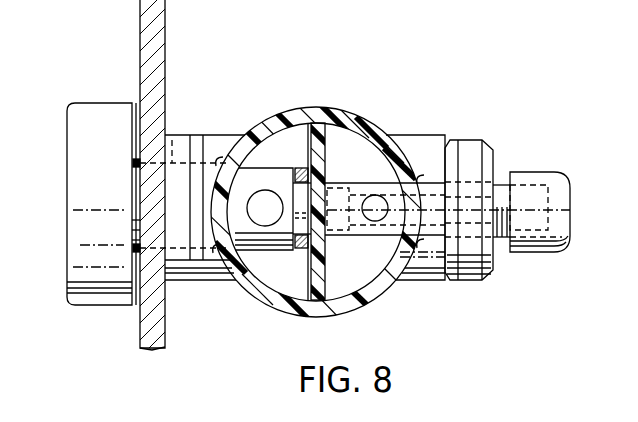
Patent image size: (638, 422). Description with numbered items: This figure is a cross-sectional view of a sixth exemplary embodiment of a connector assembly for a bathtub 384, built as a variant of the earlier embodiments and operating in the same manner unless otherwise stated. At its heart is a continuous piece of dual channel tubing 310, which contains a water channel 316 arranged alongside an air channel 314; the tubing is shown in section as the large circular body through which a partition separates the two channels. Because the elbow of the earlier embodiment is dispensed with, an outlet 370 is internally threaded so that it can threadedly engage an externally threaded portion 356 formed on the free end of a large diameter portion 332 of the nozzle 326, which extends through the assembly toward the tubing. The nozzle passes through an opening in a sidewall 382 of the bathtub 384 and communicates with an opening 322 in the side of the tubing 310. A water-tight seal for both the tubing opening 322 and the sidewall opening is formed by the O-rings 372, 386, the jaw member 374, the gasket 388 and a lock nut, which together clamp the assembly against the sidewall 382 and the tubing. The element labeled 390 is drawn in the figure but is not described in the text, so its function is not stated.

The dual channel tubing 310 is at (364, 303).
The air channel 314 is at (305, 138).
The water channel 316 is at (334, 141).
The opening 322 is at (239, 182).
The nozzle 326 is at (353, 184).
The large diameter portion 332 is at (275, 238).
The externally threaded portion 356 is at (175, 133).
The outlet 370 is at (83, 133).
The O-ring 372 is at (222, 150).
The jaw member 374 is at (218, 281).
The sidewall 382 is at (141, 15).
The bathtub 384 is at (141, 340).
The O-ring 386 is at (133, 163).
The gasket 388 is at (177, 281).
The housing block 390 is at (200, 136).